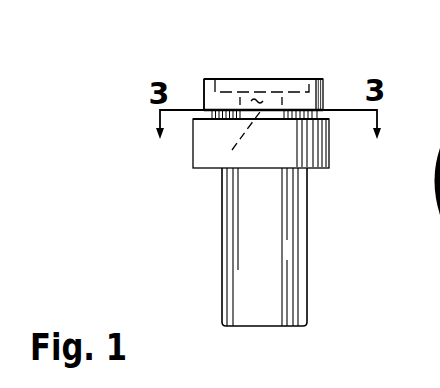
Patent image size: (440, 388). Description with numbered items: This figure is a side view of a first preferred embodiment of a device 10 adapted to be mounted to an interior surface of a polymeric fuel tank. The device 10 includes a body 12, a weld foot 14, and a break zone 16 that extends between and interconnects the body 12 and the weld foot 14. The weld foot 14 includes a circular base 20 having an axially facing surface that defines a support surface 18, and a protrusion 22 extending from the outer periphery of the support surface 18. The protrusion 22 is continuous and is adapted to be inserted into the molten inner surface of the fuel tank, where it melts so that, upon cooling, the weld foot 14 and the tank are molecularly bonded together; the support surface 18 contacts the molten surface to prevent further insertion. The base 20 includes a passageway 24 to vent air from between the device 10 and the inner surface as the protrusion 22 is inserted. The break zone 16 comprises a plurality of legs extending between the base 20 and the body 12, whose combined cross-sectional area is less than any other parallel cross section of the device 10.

The device 10 is at (205, 234).
The body 12 is at (270, 258).
The weld foot 14 is at (329, 86).
The break zone 16 is at (243, 112).
The support surface 18 is at (229, 84).
The base 20 is at (215, 102).
The protrusion 22 is at (291, 78).
The passageway 24 is at (251, 112).